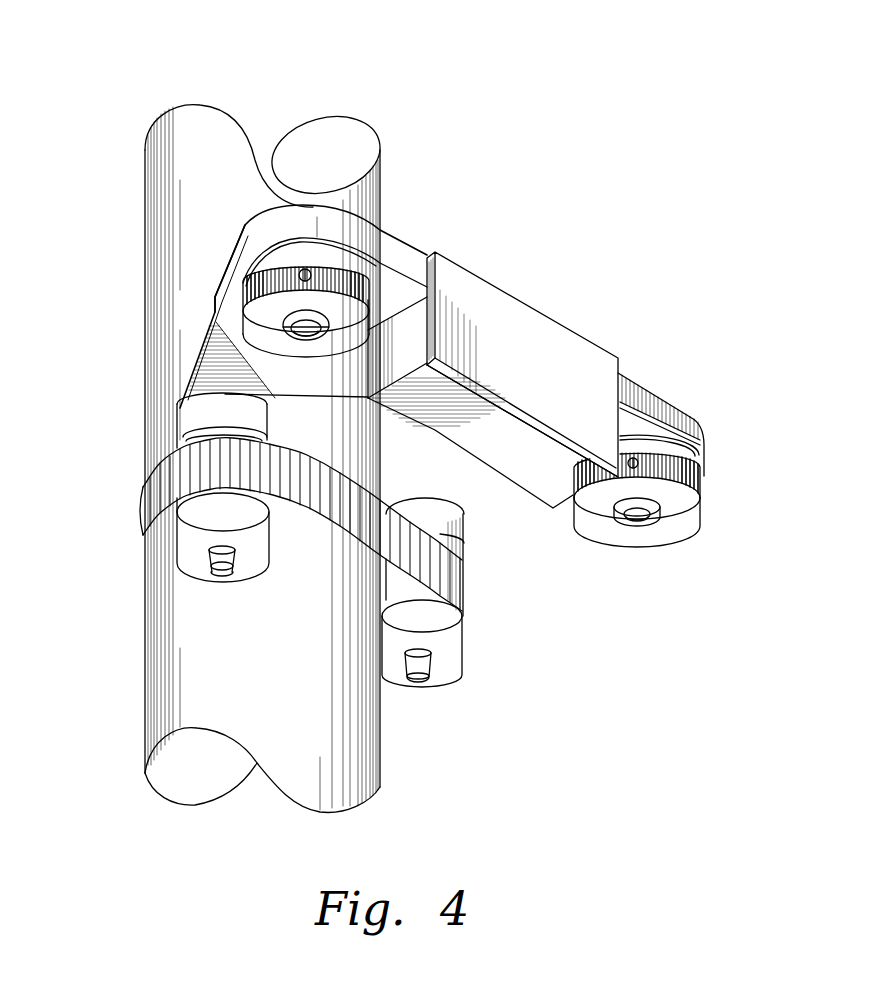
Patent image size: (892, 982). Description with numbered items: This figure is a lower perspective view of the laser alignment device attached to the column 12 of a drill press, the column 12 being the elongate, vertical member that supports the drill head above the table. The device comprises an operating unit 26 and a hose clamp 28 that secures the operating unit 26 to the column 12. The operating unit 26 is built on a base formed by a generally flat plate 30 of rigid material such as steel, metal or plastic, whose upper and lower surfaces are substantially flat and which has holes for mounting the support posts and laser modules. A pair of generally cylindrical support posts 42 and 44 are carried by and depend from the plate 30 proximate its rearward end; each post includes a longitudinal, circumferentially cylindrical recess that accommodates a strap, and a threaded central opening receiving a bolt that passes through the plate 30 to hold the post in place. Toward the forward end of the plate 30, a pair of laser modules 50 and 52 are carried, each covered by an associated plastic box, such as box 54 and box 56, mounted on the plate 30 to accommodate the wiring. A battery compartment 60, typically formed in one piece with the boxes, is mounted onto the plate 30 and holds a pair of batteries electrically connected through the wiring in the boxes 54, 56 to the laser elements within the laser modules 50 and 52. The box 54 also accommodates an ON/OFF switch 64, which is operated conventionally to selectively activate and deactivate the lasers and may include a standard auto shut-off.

The column 12 is at (143, 697).
The operating unit 26 is at (700, 430).
The hose clamp 28 is at (192, 488).
The plate 30 is at (198, 328).
The support post 42 is at (178, 562).
The support post 44 is at (458, 672).
The laser module 50 is at (305, 358).
The laser module 52 is at (697, 520).
The plastic box 54 is at (276, 221).
The box 56 is at (667, 400).
The battery compartment 60 is at (553, 332).
The ON/OFF switch 64 is at (212, 295).